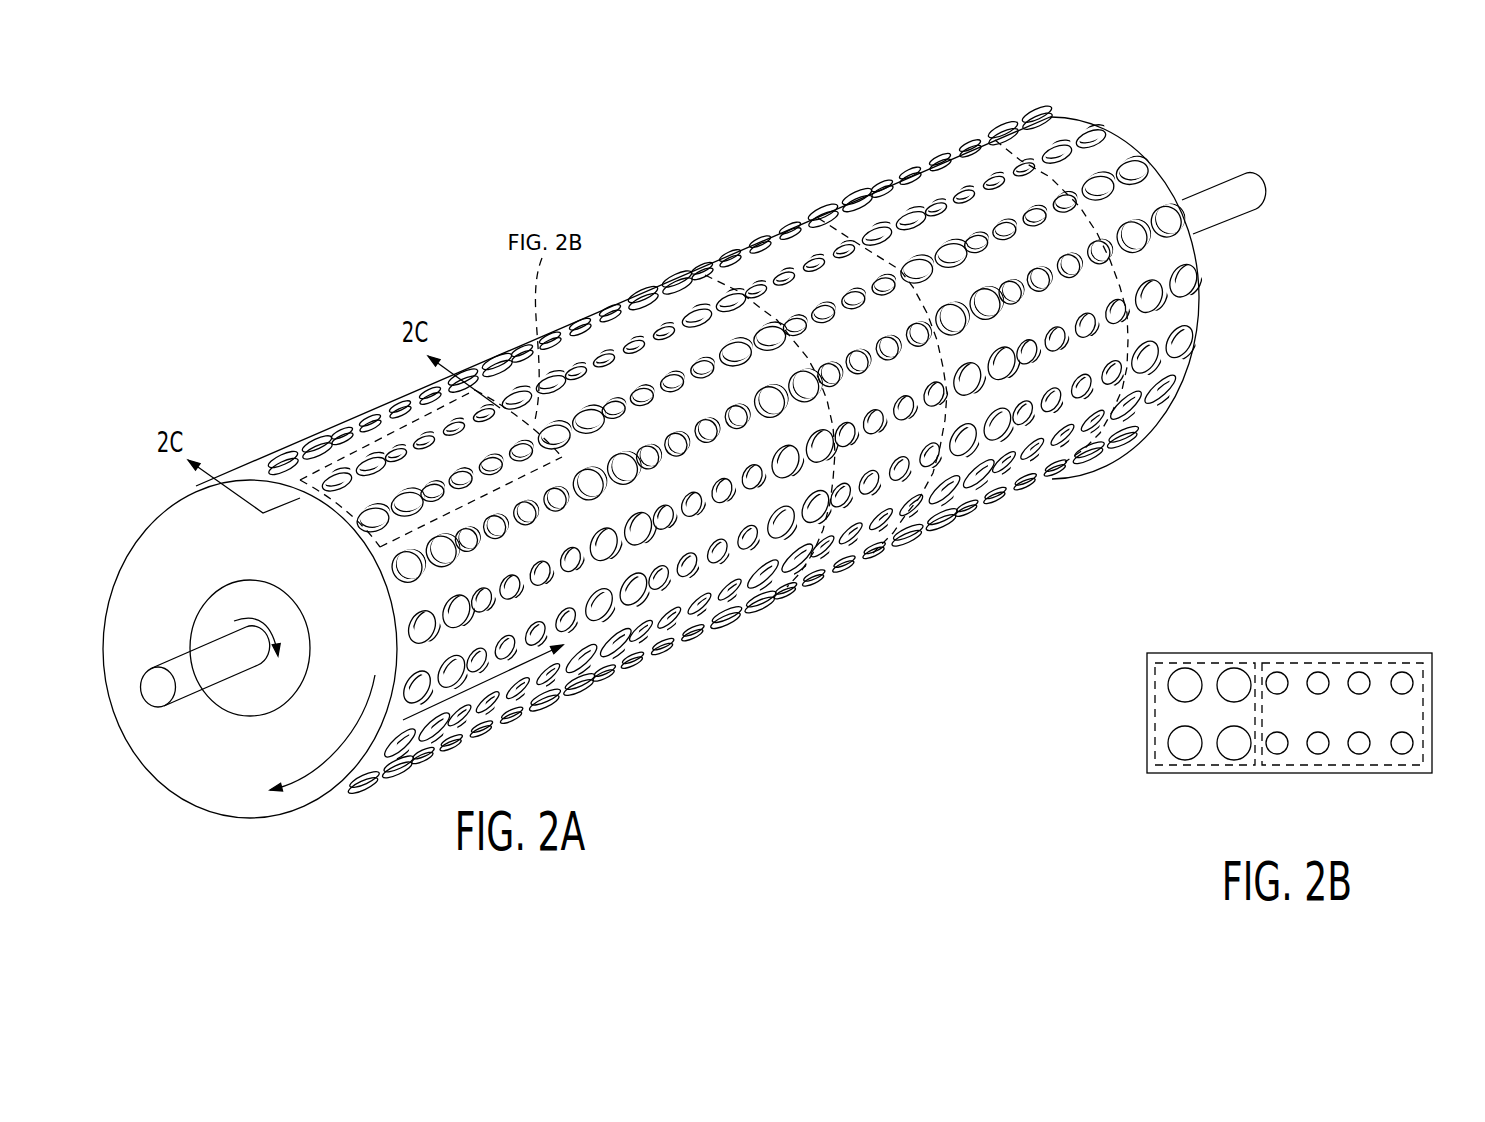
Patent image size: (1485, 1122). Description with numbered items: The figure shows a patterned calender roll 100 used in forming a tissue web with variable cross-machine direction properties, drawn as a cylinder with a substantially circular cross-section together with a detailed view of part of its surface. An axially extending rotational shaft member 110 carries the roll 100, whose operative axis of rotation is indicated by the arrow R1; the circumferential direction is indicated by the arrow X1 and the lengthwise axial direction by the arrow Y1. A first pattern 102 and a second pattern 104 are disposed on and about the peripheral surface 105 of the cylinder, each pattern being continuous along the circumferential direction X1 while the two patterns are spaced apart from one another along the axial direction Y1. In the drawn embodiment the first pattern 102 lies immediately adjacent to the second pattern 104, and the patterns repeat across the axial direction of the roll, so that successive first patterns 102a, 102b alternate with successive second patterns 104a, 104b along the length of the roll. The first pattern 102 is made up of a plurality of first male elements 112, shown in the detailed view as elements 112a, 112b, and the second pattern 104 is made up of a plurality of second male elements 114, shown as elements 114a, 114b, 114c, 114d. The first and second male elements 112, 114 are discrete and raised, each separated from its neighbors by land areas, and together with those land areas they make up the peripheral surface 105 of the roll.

In FIG. 2A, the patterned calender roll 100 is at (1118, 97).
In FIG. 2B, the first pattern 102 is at (1180, 663).
In FIG. 2A, the first pattern 102a is at (797, 207).
In FIG. 2A, the first pattern 102b is at (970, 122).
In FIG. 2B, the second pattern 104 is at (1425, 728).
In FIG. 2A, the second pattern 104a is at (678, 260).
In FIG. 2A, the second pattern 104b is at (853, 175).
In FIG. 2A, the peripheral surface 105 is at (1182, 315).
In FIG. 2A, the rotational shaft member 110 is at (155, 698).
In FIG. 2A, the first male elements 112 is at (643, 292).
In FIG. 2B, the first male element 112a is at (1176, 740).
In FIG. 2B, the first male element 112b is at (1228, 752).
In FIG. 2A, the second male elements 114 is at (606, 306).
In FIG. 2B, the second male element 114a is at (1277, 683).
In FIG. 2B, the second male element 114b is at (1318, 683).
In FIG. 2B, the second male element 114c is at (1359, 683).
In FIG. 2B, the second male element 114d is at (1402, 683).
In FIG. 2A, the axis of rotation R1 is at (276, 622).
In FIG. 2A, the circumferential direction X1 is at (308, 777).
In FIG. 2A, the axial direction Y1 is at (527, 663).